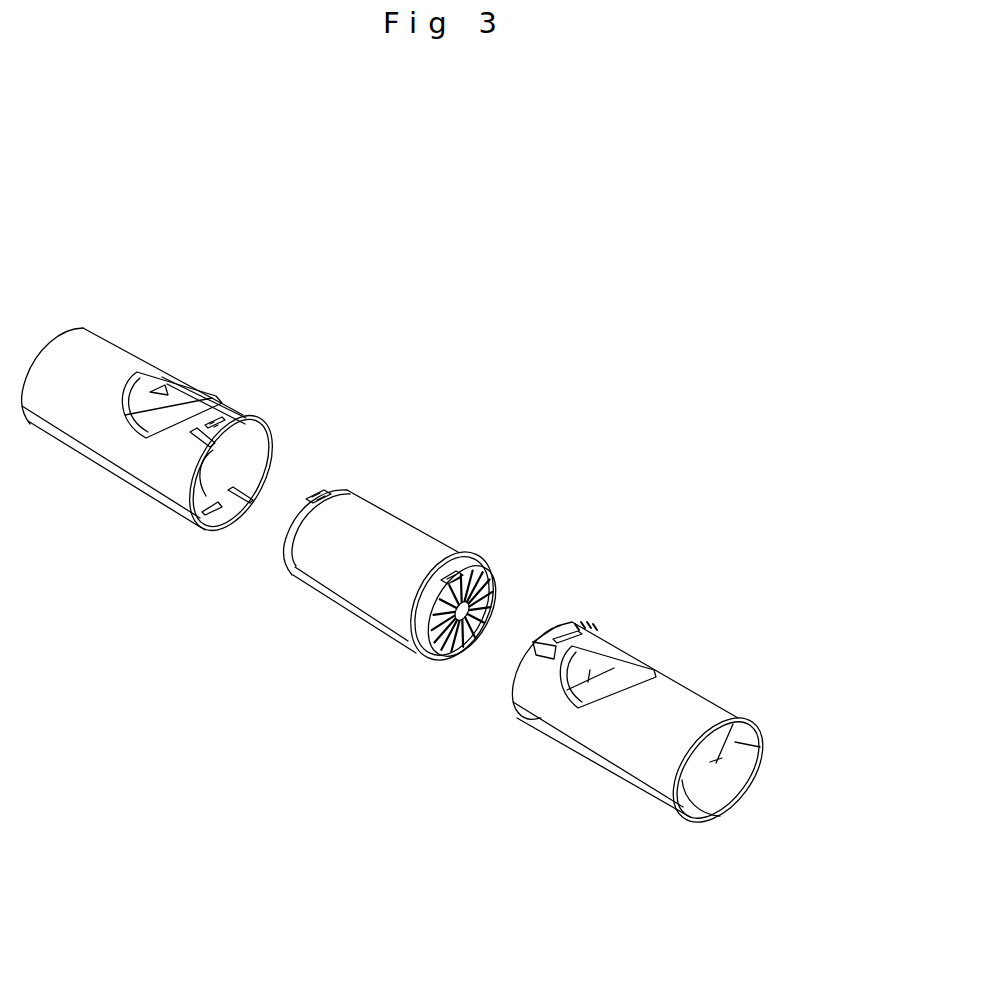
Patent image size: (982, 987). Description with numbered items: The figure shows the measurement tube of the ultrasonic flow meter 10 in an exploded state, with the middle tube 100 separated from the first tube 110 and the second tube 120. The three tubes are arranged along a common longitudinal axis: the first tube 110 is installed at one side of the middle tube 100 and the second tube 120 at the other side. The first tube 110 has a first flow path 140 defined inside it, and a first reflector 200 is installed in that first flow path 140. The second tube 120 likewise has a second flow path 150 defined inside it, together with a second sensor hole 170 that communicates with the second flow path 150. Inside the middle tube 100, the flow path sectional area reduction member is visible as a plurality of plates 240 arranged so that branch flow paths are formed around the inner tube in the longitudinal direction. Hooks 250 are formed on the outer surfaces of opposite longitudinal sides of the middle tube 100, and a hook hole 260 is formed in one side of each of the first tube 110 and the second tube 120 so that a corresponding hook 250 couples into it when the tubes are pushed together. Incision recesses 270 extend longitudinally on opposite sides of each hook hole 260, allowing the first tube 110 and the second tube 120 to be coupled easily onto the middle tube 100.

The connector assembly 10 is at (108, 114).
The middle tube 100 is at (401, 498).
The first tube 110 is at (131, 335).
The second tube 120 is at (696, 674).
The first flow path 140 is at (150, 375).
The second flow path 150 is at (735, 742).
The second sensor hole 170 is at (577, 706).
The first reflector 200 is at (197, 394).
The plates 240 is at (496, 590).
The hooks 250 is at (320, 488).
The hook hole 260 is at (233, 403).
The incision recesses 270 is at (202, 432).